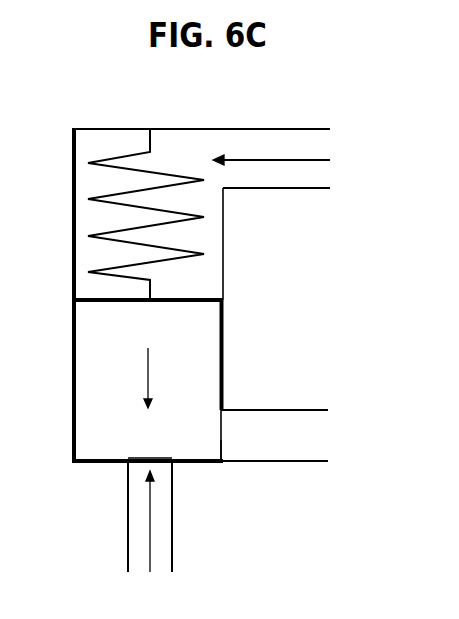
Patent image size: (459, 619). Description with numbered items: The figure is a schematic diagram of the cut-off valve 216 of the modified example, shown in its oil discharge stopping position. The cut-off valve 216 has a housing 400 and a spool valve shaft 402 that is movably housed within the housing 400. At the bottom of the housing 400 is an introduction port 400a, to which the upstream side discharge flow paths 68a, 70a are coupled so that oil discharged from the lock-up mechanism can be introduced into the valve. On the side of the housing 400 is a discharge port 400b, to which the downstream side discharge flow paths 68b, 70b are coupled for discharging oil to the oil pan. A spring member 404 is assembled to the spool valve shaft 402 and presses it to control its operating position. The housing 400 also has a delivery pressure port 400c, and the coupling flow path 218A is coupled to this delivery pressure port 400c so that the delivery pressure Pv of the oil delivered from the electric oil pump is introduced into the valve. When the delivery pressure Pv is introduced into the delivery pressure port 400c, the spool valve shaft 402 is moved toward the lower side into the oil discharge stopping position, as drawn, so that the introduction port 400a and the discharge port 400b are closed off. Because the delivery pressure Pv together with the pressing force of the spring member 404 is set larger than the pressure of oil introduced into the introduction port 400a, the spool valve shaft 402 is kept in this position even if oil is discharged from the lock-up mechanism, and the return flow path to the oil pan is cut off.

The cut-off valve 216 is at (62, 106).
The coupling flow path 218A is at (307, 128).
The housing 400 is at (72, 178).
The introduction port 400a is at (128, 466).
The discharge port 400b is at (225, 440).
The delivery pressure port 400c is at (225, 178).
The spool valve shaft 402 is at (100, 357).
The spring member 404 is at (100, 271).
The upstream side discharge flow path 68a is at (96, 516).
The upstream side discharge flow path 70a is at (128, 537).
The downstream side discharge flow path 68b is at (318, 413).
The downstream side discharge flow path 70b is at (306, 408).